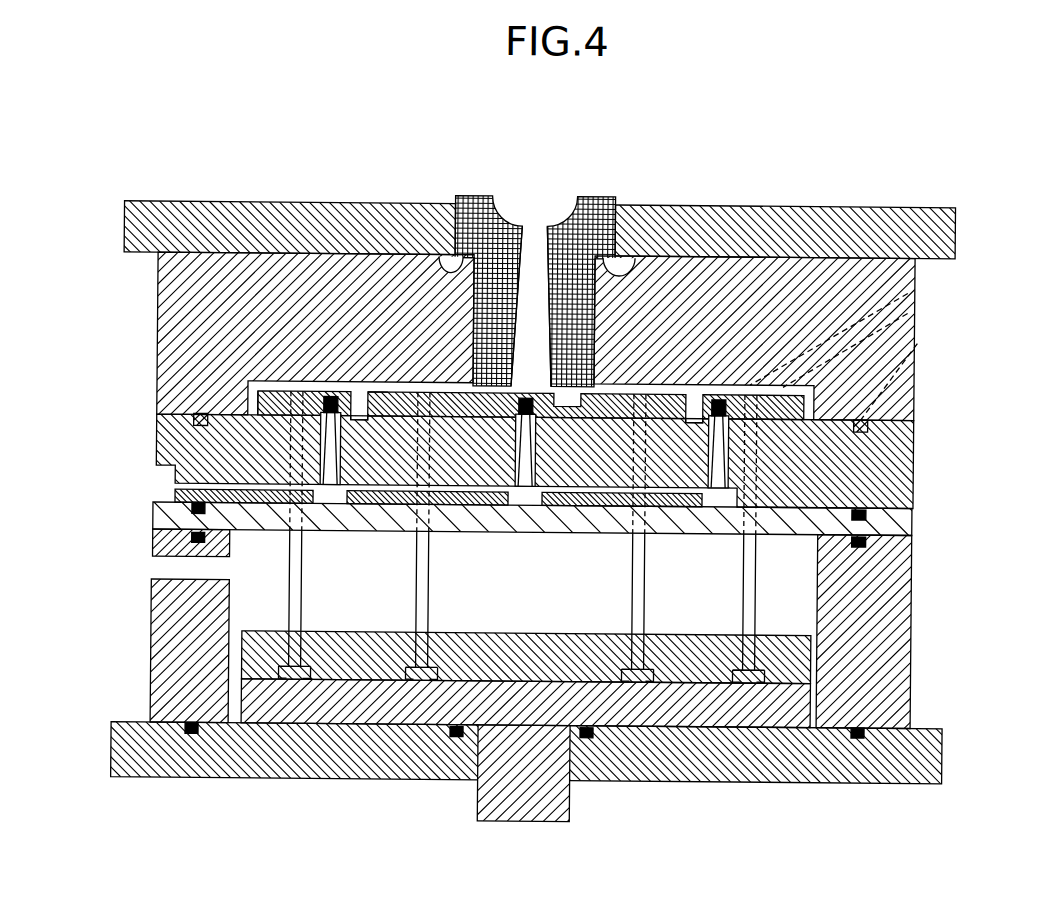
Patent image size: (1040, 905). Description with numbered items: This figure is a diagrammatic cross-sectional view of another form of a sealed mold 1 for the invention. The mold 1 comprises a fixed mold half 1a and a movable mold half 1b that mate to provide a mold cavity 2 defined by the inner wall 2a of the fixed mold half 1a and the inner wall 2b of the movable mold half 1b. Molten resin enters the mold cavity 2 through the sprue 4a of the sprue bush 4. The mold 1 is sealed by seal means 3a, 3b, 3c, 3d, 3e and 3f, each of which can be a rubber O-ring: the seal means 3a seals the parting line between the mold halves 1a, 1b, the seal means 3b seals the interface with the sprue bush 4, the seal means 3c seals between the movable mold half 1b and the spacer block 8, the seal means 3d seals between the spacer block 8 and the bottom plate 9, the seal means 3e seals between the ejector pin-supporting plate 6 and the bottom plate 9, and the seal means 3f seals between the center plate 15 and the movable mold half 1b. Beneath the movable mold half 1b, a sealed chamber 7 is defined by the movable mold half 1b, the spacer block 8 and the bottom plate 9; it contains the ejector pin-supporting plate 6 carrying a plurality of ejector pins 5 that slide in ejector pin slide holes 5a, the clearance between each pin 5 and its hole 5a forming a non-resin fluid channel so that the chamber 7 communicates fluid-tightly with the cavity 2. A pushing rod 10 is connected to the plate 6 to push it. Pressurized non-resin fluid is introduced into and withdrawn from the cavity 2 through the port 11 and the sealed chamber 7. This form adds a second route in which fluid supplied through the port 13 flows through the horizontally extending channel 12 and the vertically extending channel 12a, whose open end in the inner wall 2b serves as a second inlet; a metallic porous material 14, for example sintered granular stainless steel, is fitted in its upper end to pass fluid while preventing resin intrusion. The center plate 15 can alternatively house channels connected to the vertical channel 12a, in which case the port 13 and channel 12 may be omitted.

The mold 1 is at (520, 513).
The fixed mold half 1a is at (892, 392).
The movable mold half 1b is at (893, 454).
The mold cavity 2 is at (664, 388).
The inner wall of fixed mold half 2a is at (273, 387).
The inner wall of movable mold half 2b is at (382, 388).
The seal means 3a is at (190, 418).
The seal means 3b is at (442, 253).
The seal means 3c is at (190, 538).
The seal means 3d is at (200, 733).
The seal means 3e is at (457, 734).
The seal means 3f is at (190, 509).
The sprue bush 4 is at (587, 191).
The sprue 4a is at (529, 324).
The ejector pin 5 is at (290, 580).
The ejector pin slide hole 5a is at (912, 301).
The ejector pin-supporting plate 6 is at (811, 654).
The sealed chamber 7 is at (374, 595).
The spacer block 8 is at (152, 660).
The bottom plate 9 is at (284, 776).
The pushing rod 10 is at (530, 797).
The port 11 is at (165, 567).
The horizontally extending channel 12 is at (580, 486).
The vertically extending channel 12a is at (912, 284).
The port 13 is at (175, 495).
The metallic porous material 14 is at (327, 405).
The center plate 15 is at (900, 519).